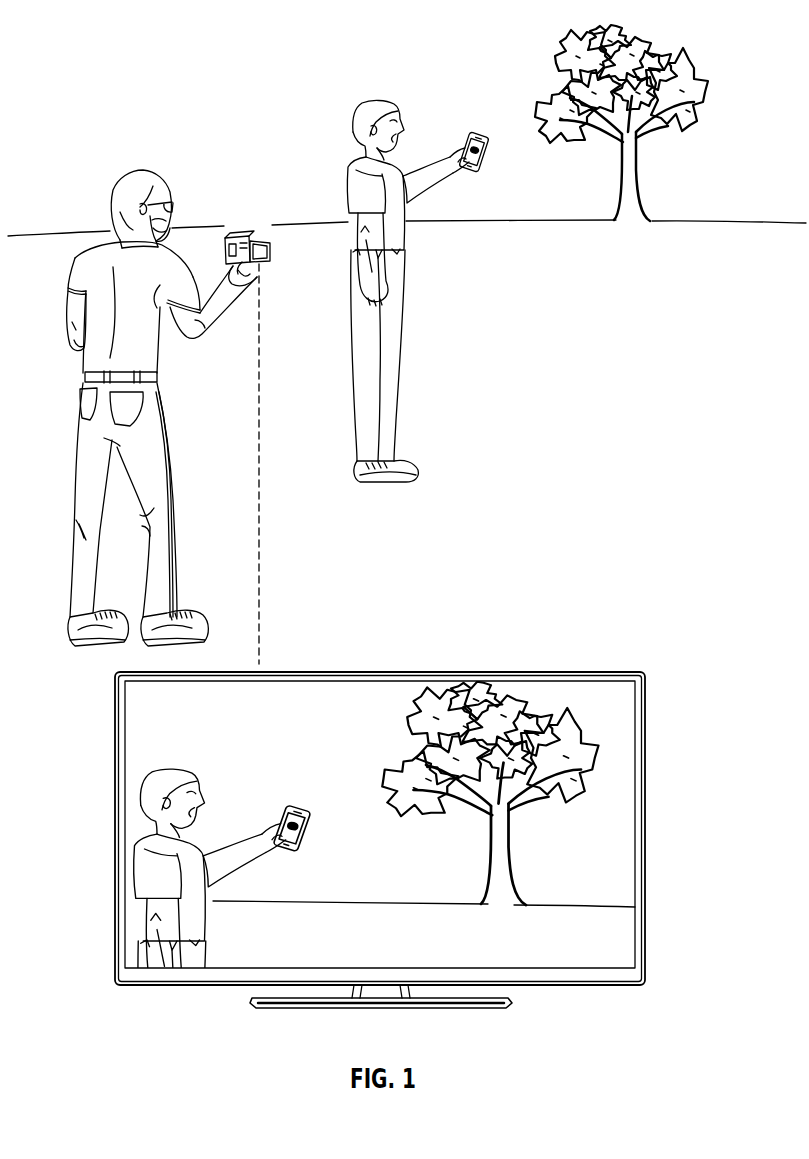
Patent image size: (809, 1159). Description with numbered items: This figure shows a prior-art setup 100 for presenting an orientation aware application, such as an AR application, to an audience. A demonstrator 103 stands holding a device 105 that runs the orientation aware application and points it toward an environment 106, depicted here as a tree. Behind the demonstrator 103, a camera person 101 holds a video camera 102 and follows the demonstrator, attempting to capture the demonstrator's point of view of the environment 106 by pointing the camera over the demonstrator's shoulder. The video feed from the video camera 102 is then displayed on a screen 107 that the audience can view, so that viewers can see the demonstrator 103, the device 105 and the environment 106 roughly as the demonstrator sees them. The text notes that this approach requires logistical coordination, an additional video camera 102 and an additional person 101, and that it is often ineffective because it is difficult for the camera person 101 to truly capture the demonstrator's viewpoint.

The setup 100 is at (114, 53).
The camera person 101 is at (114, 197).
The video camera 102 is at (254, 236).
The demonstrator 103 is at (354, 118).
The device 105 is at (487, 150).
The environment 106 is at (640, 177).
The screen 107 is at (615, 672).